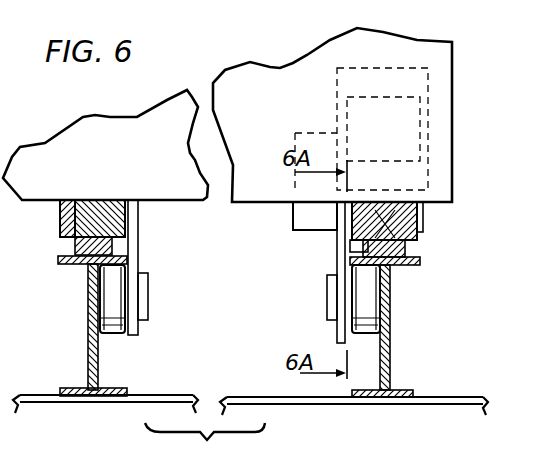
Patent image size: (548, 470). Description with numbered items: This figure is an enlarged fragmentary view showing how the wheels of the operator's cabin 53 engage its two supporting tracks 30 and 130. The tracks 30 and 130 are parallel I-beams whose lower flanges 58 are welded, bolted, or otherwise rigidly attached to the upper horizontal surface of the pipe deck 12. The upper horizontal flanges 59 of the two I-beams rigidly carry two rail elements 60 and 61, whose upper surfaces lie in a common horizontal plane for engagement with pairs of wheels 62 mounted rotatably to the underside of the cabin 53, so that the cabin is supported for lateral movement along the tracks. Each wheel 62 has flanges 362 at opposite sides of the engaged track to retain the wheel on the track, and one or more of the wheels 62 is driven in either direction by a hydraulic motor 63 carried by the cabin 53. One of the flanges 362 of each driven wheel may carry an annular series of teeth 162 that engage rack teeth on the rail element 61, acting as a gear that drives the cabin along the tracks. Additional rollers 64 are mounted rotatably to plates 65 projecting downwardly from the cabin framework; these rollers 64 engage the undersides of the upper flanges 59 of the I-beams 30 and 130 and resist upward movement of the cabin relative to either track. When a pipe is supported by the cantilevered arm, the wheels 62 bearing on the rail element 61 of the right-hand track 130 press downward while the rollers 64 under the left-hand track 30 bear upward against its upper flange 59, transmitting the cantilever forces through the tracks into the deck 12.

The pipe deck 12 is at (427, 405).
The track 30 is at (90, 370).
The operator's cabin 53 is at (310, 62).
The lower flanges 58 is at (413, 386).
The upper horizontal flanges 59 is at (80, 267).
The rail element 60 is at (82, 206).
The rail element 61 is at (373, 207).
The wheels 62 is at (60, 226).
The hydraulic motor 63 is at (315, 135).
The rollers 64 is at (110, 337).
The plates 65 is at (140, 236).
The track 130 is at (390, 318).
The teeth 162 is at (350, 242).
The flanges 362 is at (405, 248).